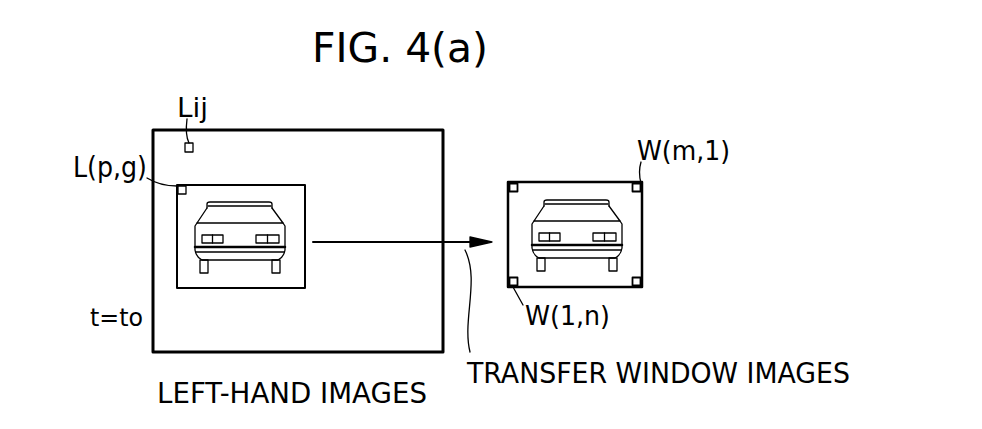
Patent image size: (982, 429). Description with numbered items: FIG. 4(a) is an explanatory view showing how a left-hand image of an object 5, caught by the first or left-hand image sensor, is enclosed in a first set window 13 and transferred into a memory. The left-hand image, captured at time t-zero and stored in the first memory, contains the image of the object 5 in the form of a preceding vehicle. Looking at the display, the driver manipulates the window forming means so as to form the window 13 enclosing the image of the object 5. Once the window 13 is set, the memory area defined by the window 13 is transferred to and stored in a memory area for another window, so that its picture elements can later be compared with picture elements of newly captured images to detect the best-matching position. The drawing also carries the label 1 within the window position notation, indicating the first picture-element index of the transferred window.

The object 5 is at (250, 203).
The window 13 is at (298, 186).
The window position W(1,1) 1 is at (512, 184).